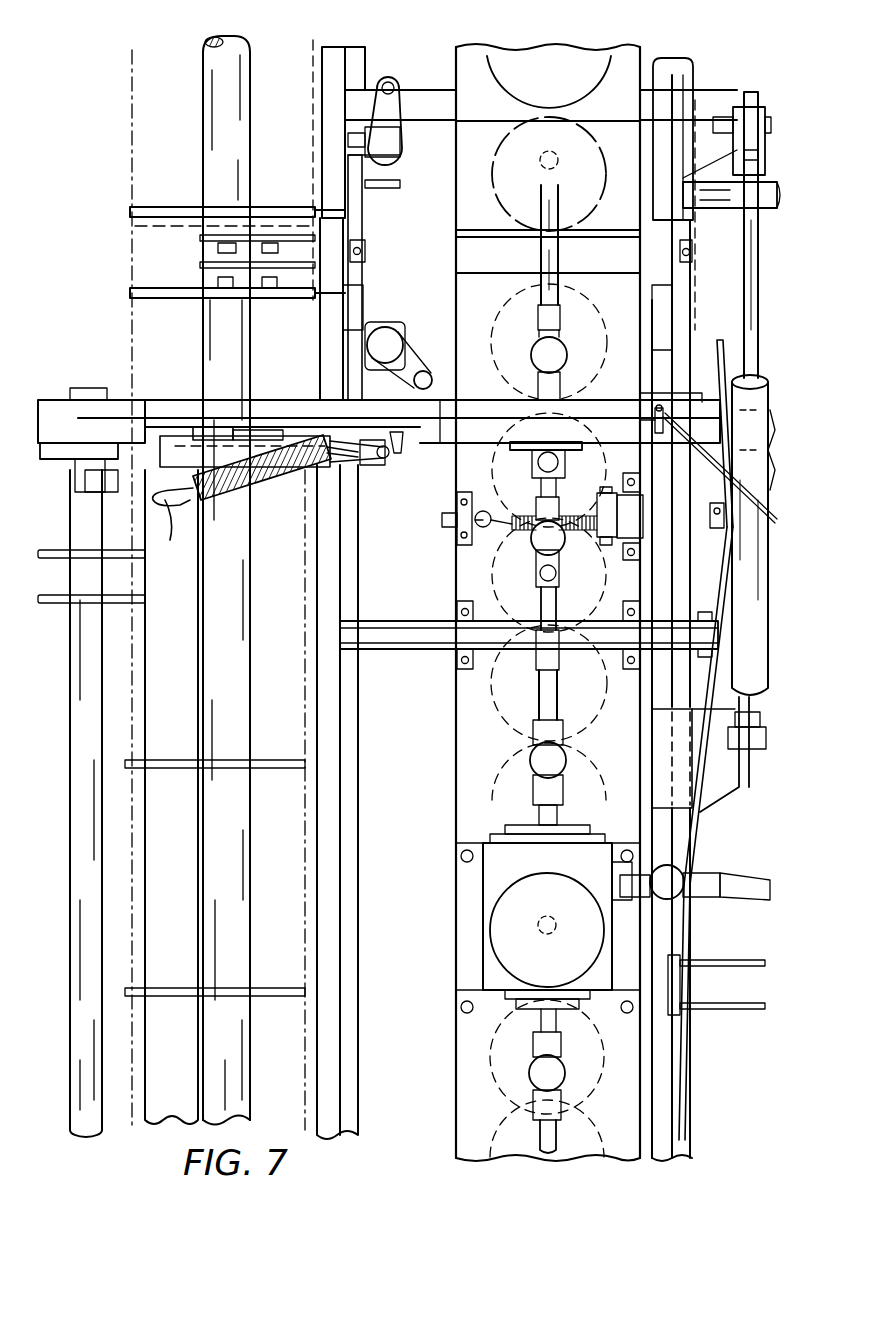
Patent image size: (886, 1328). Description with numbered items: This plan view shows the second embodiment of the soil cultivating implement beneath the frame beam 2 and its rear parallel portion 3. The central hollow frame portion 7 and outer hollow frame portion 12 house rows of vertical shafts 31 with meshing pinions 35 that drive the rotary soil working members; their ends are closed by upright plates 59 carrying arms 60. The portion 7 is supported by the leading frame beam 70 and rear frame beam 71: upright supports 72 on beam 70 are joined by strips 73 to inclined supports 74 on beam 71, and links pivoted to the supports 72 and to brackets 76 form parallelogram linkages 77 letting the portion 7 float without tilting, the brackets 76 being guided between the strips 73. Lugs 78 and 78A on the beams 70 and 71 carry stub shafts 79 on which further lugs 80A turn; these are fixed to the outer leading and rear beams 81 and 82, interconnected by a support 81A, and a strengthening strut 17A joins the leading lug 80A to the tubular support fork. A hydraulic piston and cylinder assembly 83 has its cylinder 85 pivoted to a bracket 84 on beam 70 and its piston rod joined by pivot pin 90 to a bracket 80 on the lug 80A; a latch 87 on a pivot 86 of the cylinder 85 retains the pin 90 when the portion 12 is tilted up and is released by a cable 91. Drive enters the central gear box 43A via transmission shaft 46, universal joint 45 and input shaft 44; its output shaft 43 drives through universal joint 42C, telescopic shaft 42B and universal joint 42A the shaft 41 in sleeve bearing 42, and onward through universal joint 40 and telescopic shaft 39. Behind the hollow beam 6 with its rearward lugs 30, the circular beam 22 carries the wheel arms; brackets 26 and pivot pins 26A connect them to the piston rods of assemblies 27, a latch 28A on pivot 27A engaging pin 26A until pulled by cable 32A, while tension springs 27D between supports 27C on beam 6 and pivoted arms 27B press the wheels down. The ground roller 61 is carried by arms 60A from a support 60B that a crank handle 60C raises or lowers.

The frame beam 2 is at (770, 415).
The rear parallel portion 3 is at (48, 400).
The hollow beam 6 is at (178, 711).
The central hollow frame portion 7 is at (456, 690).
The outer hollow frame portion 12 is at (474, 58).
The strengthening strut 17A is at (776, 182).
The horizontal beam 22 is at (97, 388).
The bracket 26 is at (80, 470).
The horizontal pivot pin 26A is at (85, 495).
The hydraulic piston and cylinder assembly 27 is at (280, 430).
The horizontal pivot 27A is at (205, 427).
The arm 27B is at (388, 465).
The support 27C is at (170, 540).
The helical tension spring 27D is at (285, 506).
The latch 28A is at (110, 418).
The lug 30 is at (48, 605).
The vertical shaft 31 is at (547, 152).
The pull member 32A is at (400, 452).
The pinion 35 is at (505, 300).
The telescopic transmission shaft 39 is at (555, 202).
The universal joint 40 is at (568, 356).
The shaft 41 is at (580, 405).
The sleeve bearing 42 is at (528, 471).
The universal joint 42A is at (538, 546).
The telescopic shaft 42B is at (562, 703).
The universal joint 42C is at (530, 762).
The output shaft 43 is at (536, 816).
The central gear box 43A is at (487, 877).
The rotary input shaft 44 is at (596, 878).
The universal joint 45 is at (640, 896).
The transmission shaft 46 is at (736, 906).
The upright plate 59 is at (470, 280).
The arm 60 is at (215, 268).
The arm 60A is at (385, 190).
The support 60B is at (397, 175).
The crank handle 60C is at (388, 76).
The ground roller 61 is at (125, 92).
The leading frame beam 70 is at (673, 844).
The rear frame beam 71 is at (350, 577).
The upright support 72 is at (690, 604).
The strip 73 is at (457, 616).
The inclined support 74 is at (391, 621).
The bracket 76 is at (607, 612).
The parallelogram linkage 77 is at (572, 605).
The lug 78 is at (652, 302).
The lug 78A is at (343, 332).
The stub shaft 79 is at (366, 251).
The bracket 80 is at (752, 94).
The further lug 80A is at (348, 161).
The leading beam 81 is at (689, 68).
The support 81A is at (430, 92).
The rear beam 82 is at (322, 69).
The hydraulic piston and cylinder assembly 83 is at (775, 612).
The bracket 84 is at (725, 788).
The cylinder 85 is at (755, 570).
The horizontal pivot 86 is at (716, 530).
The latch 87 is at (719, 340).
The horizontal pivot pin 90 is at (770, 118).
The pull member 91 is at (655, 740).